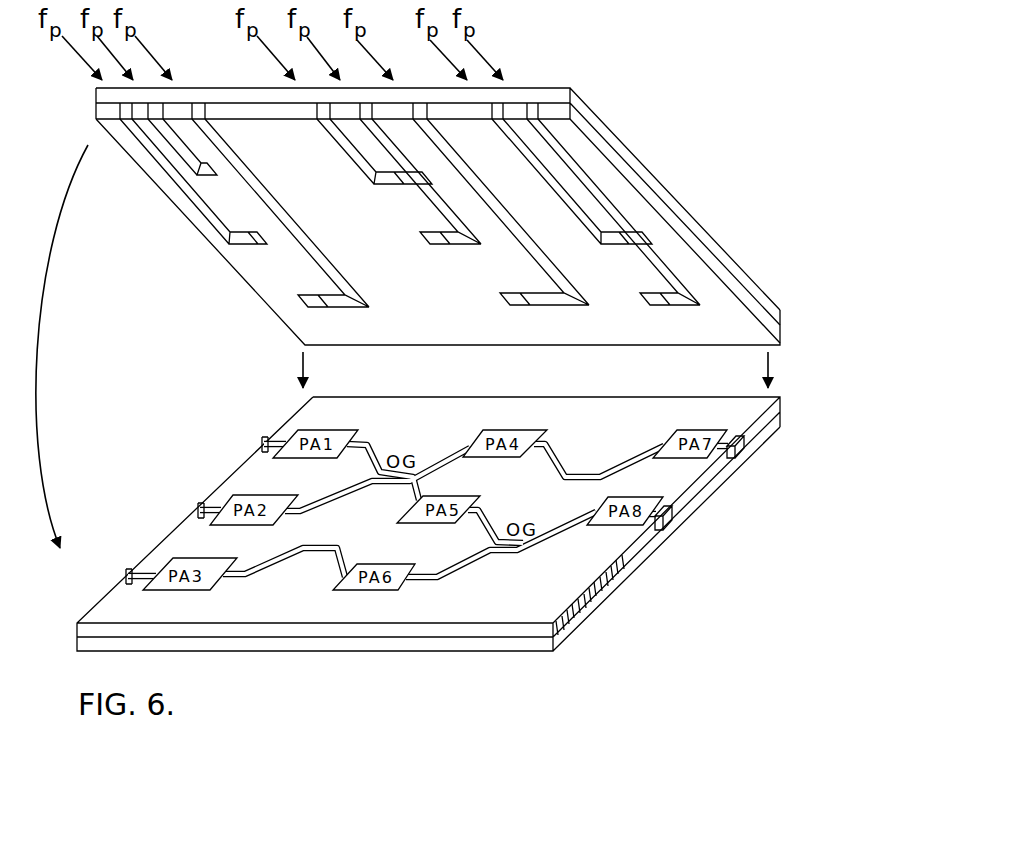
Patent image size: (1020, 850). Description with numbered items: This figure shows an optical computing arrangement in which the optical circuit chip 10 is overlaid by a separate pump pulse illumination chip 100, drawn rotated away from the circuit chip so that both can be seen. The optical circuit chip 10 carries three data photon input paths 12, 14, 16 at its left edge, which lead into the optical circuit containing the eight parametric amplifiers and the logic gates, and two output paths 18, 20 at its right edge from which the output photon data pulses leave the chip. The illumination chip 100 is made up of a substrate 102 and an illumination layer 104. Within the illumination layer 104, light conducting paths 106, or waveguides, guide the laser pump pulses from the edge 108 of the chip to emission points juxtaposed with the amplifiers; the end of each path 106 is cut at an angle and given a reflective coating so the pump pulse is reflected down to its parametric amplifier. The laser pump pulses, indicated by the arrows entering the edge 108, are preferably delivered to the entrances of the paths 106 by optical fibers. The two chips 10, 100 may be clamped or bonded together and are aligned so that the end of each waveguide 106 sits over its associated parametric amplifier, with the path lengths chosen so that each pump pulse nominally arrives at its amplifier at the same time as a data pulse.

The optical circuit chip 10 is at (513, 620).
The data photon input path 12 is at (279, 440).
The data photon input path 14 is at (213, 507).
The data photon input path 16 is at (148, 573).
The output path 18 is at (747, 430).
The output path 20 is at (660, 522).
The pump pulse illumination chip 100 is at (246, 282).
The substrate 102 is at (590, 113).
The illumination layer 104 is at (625, 173).
The light conducting paths 106 is at (178, 143).
The edge 108 is at (450, 117).